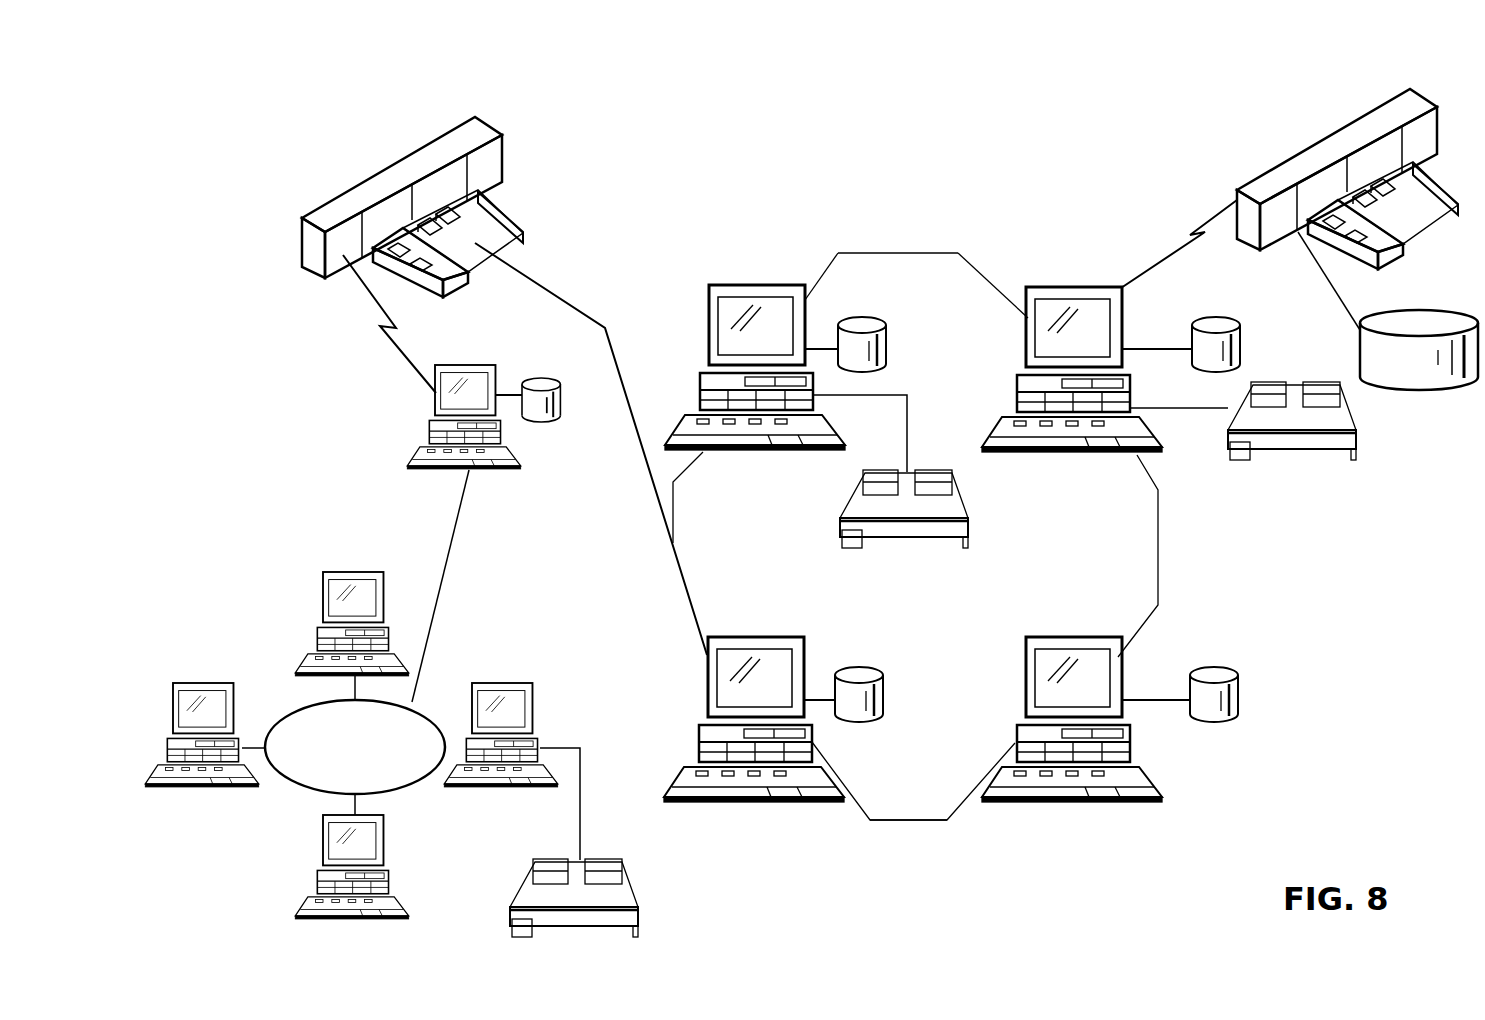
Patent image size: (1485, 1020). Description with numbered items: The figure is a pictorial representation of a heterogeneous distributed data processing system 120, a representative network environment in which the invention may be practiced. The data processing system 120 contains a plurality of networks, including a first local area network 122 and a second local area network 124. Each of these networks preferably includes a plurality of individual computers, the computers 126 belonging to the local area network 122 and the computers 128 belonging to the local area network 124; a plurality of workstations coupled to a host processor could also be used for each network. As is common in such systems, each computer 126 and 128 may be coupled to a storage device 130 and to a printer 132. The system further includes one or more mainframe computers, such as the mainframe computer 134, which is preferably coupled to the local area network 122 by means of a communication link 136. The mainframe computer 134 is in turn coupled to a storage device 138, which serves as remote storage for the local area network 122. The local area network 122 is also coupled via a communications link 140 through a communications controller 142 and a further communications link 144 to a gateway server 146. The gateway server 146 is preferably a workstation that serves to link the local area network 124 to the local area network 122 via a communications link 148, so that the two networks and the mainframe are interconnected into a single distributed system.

The distributed data processing system 120 is at (912, 240).
The local area network 122 is at (900, 822).
The local area network 124 is at (307, 790).
The individual computer 126 is at (727, 285).
The individual computer 128 is at (322, 598).
The storage device 130 is at (888, 348).
The printer 132 is at (955, 507).
The mainframe computer 134 is at (1258, 188).
The communication link 136 is at (1210, 218).
The storage device 138 is at (1417, 368).
The communications link 140 is at (574, 308).
The communications controller 142 is at (377, 185).
The communications link 144 is at (400, 360).
The gateway server 146 is at (480, 365).
The communications link 148 is at (445, 548).